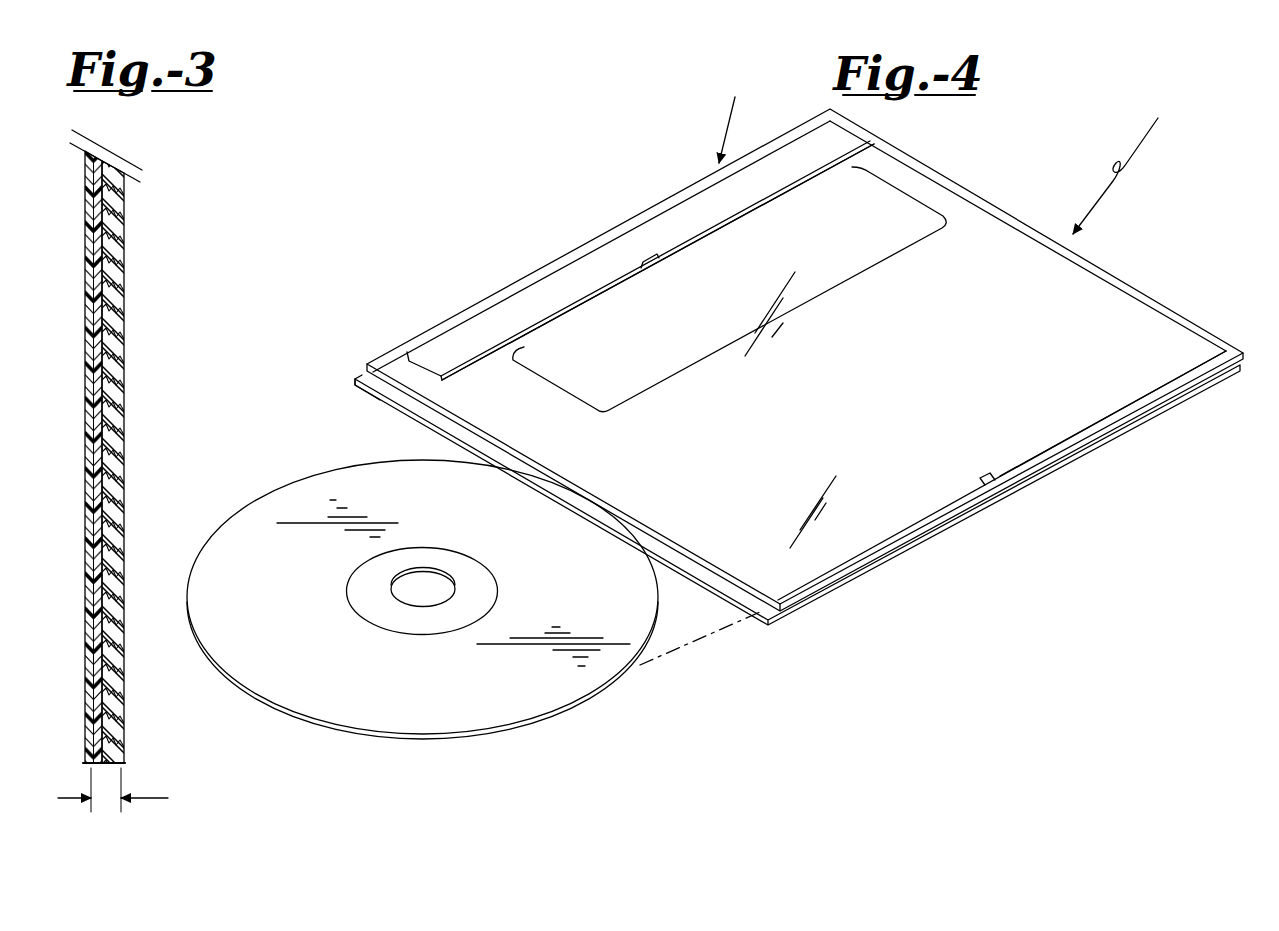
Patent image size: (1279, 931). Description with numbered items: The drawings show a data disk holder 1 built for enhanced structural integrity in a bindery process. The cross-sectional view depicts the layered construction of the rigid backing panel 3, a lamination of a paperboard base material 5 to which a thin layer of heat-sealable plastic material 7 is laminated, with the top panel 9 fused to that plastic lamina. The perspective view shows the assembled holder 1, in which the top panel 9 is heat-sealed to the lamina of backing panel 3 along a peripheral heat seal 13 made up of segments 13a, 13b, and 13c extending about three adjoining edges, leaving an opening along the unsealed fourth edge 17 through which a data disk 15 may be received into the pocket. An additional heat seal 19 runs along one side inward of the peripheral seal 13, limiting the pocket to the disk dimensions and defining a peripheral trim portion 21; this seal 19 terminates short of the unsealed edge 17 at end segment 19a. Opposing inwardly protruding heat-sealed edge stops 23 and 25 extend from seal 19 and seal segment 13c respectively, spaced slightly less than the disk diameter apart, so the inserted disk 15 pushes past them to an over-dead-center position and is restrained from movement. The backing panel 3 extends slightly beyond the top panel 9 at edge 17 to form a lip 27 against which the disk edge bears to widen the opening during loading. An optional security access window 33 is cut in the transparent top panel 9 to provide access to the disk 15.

In FIG. 4, the data disk holder 1 is at (1123, 165).
In FIG. 3, the backing panel 3 is at (155, 798).
In FIG. 4, the backing panel 3 is at (824, 594).
In FIG. 3, the paperboard base material 5 is at (124, 332).
In FIG. 3, the layer of heat-sealable plastic material 7 is at (95, 492).
In FIG. 3, the top panel 9 is at (88, 386).
In FIG. 4, the top panel 9 is at (1112, 388).
In FIG. 4, the heat seal 13 is at (805, 359).
In FIG. 4, the heat seal segment 13a is at (683, 197).
In FIG. 4, the heat seal segment 13b is at (1163, 305).
In FIG. 4, the heat seal segment 13c is at (905, 535).
In FIG. 4, the data disk 15 is at (405, 700).
In FIG. 4, the unsealed fourth edge 17 is at (767, 495).
In FIG. 4, the additional heat seal 19 is at (640, 260).
In FIG. 4, the end segment 19a is at (430, 374).
In FIG. 4, the peripheral trim portion 21 is at (622, 256).
In FIG. 4, the edge stop 23 is at (652, 278).
In FIG. 4, the edge stop 25 is at (990, 472).
In FIG. 4, the lip 27 is at (380, 385).
In FIG. 4, the security access window 33 is at (834, 290).